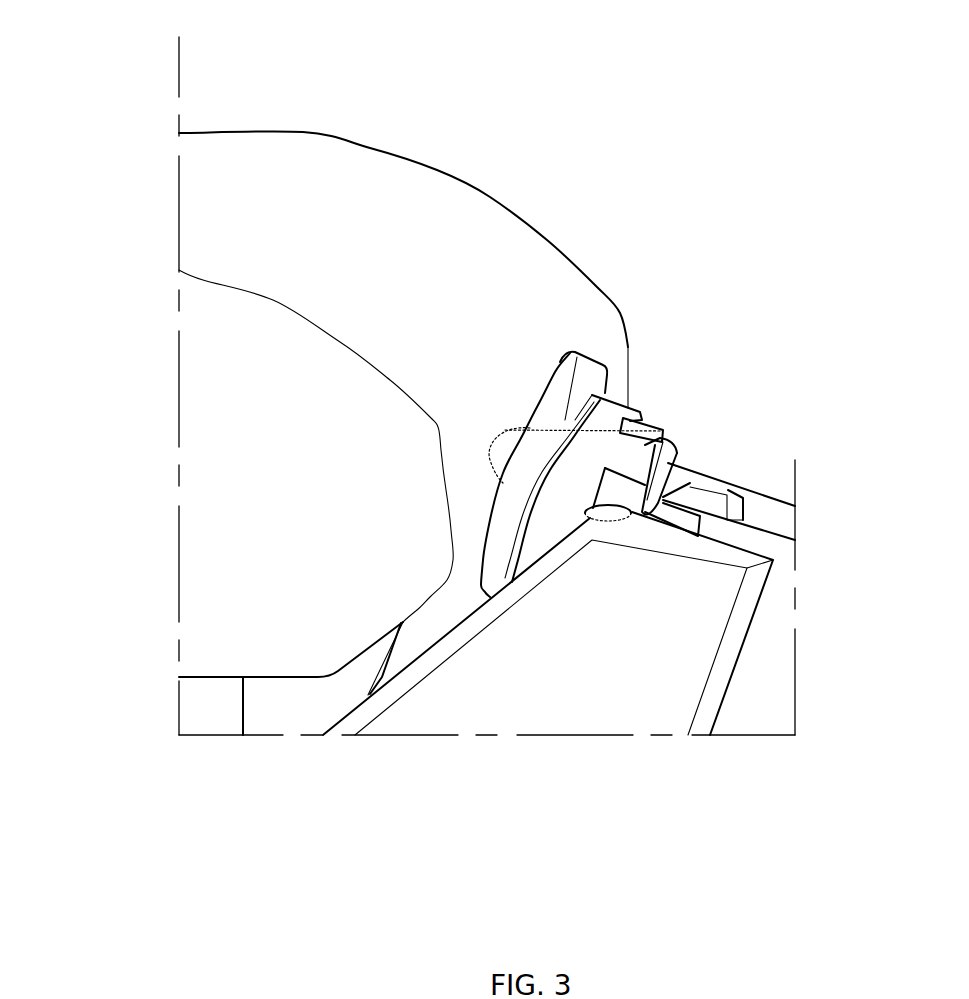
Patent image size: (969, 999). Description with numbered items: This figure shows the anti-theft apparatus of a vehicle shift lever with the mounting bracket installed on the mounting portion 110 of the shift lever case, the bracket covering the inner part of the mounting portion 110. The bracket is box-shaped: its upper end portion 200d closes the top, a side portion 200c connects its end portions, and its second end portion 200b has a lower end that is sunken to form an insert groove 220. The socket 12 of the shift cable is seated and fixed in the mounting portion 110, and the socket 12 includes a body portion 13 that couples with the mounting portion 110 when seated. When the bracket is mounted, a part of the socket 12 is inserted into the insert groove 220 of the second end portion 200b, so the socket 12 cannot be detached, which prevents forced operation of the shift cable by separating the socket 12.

The mounting portion 110 is at (553, 697).
The socket 12 is at (627, 400).
The body portion 13 is at (578, 370).
The insert groove 220 is at (660, 431).
The second end portion 200b is at (530, 365).
The side portion 200c is at (245, 527).
The upper end portion 200d is at (318, 197).